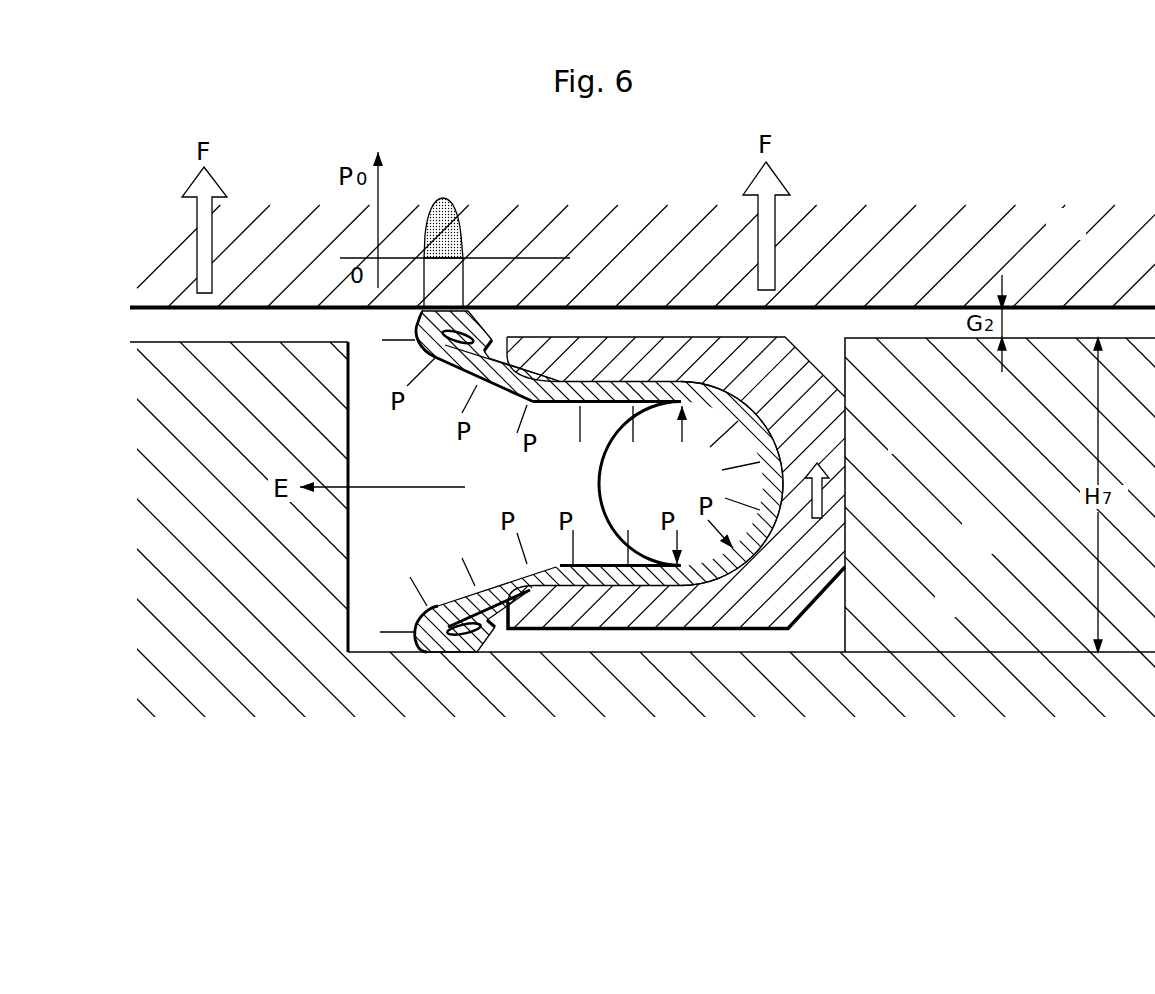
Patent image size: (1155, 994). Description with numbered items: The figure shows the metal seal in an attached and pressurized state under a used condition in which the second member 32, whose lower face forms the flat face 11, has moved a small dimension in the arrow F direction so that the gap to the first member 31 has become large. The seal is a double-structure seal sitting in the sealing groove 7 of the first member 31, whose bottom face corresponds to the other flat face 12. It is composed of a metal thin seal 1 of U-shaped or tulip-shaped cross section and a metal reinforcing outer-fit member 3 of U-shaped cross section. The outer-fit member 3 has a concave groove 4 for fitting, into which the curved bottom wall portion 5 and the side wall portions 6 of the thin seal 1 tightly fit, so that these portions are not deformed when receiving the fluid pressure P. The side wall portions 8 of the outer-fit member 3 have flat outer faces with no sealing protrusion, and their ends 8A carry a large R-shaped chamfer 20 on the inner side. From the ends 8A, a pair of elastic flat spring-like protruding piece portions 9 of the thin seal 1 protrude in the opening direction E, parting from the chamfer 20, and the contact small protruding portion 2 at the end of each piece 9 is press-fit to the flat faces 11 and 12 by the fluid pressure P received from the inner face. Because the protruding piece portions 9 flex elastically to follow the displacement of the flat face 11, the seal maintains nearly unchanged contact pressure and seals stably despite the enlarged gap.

The thin seal 1 is at (607, 406).
The contact small protruding portion 2 is at (451, 310).
The reinforcing outer-fit member 3 is at (814, 355).
The concave groove for fitting 4 is at (704, 395).
The bottom wall portion 5 is at (780, 447).
The side wall portions 6 is at (656, 381).
The sealing groove 7 is at (814, 648).
The side wall portions 8 is at (626, 357).
The ends 8A is at (530, 357).
The protruding piece portions 9 is at (456, 366).
The flat face 11 is at (934, 306).
The flat face 12 is at (713, 652).
The R-shaped chamfer 20 is at (566, 345).
The first member 31 is at (1000, 553).
The second member 32 is at (1080, 237).